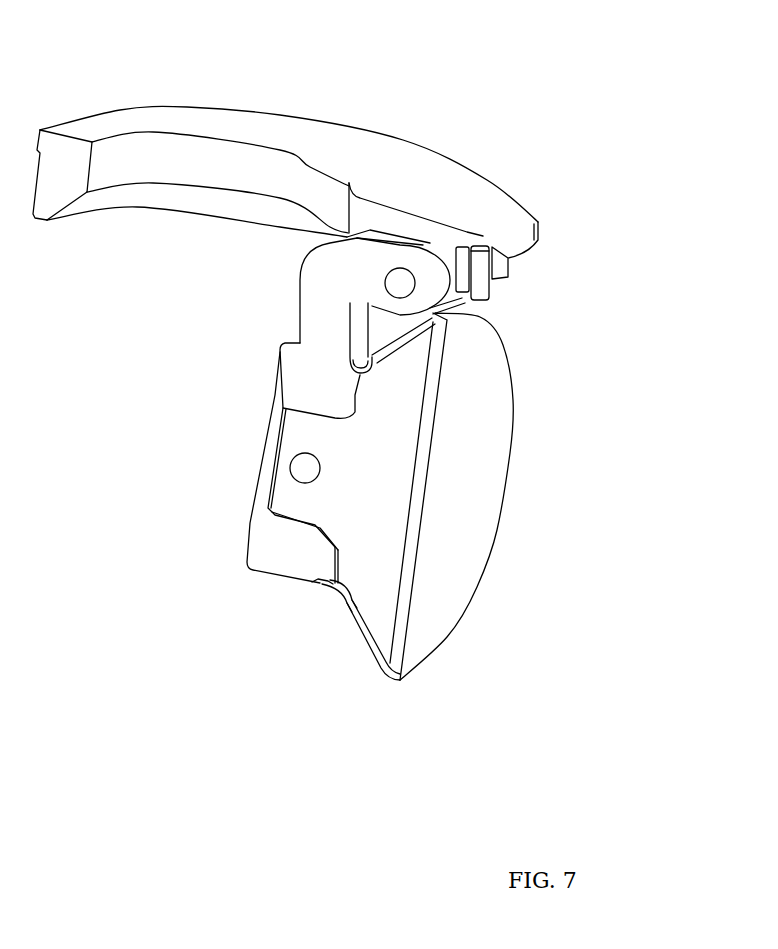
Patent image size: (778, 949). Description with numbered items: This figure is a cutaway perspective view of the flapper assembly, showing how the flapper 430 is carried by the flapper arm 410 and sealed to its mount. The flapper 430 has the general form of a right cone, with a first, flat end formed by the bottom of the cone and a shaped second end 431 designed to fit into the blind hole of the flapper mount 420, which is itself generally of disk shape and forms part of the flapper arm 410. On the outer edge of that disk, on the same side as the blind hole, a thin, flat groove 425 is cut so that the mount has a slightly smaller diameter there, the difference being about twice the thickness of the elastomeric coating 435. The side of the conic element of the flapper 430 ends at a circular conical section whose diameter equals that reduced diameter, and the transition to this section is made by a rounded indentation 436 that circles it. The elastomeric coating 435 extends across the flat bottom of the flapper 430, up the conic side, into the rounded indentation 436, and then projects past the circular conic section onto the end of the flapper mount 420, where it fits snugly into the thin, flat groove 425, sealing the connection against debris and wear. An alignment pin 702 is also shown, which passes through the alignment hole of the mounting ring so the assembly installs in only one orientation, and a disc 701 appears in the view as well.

The alignment pin 702 is at (484, 245).
The flapper arm 410 is at (296, 312).
The disc 701 is at (488, 420).
The shaped second end 431 is at (297, 438).
The flapper mount 420 is at (242, 537).
The thin, flat groove 425 is at (307, 591).
The elastomeric coating 435 is at (413, 558).
The rounded indentation 436 is at (338, 600).
The flapper 430 is at (367, 608).